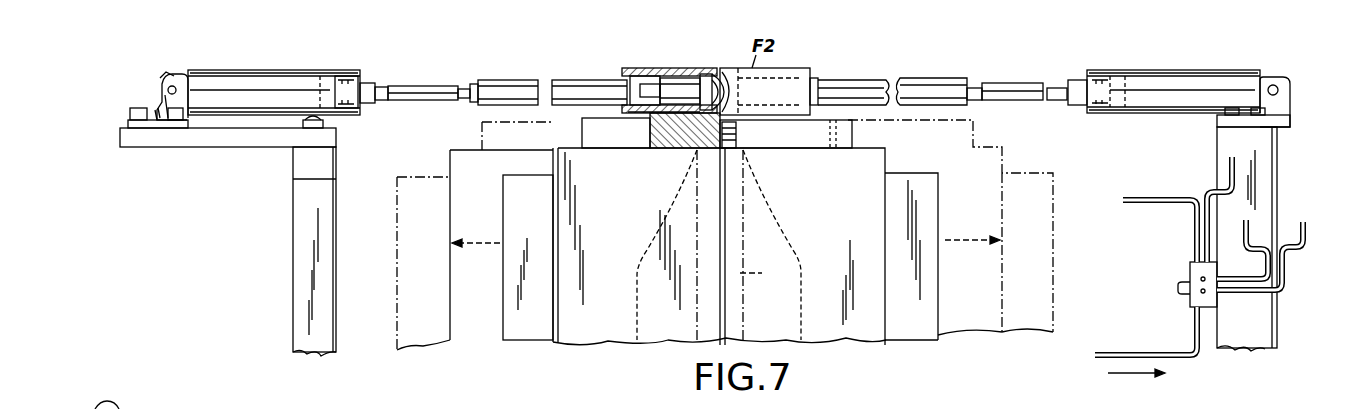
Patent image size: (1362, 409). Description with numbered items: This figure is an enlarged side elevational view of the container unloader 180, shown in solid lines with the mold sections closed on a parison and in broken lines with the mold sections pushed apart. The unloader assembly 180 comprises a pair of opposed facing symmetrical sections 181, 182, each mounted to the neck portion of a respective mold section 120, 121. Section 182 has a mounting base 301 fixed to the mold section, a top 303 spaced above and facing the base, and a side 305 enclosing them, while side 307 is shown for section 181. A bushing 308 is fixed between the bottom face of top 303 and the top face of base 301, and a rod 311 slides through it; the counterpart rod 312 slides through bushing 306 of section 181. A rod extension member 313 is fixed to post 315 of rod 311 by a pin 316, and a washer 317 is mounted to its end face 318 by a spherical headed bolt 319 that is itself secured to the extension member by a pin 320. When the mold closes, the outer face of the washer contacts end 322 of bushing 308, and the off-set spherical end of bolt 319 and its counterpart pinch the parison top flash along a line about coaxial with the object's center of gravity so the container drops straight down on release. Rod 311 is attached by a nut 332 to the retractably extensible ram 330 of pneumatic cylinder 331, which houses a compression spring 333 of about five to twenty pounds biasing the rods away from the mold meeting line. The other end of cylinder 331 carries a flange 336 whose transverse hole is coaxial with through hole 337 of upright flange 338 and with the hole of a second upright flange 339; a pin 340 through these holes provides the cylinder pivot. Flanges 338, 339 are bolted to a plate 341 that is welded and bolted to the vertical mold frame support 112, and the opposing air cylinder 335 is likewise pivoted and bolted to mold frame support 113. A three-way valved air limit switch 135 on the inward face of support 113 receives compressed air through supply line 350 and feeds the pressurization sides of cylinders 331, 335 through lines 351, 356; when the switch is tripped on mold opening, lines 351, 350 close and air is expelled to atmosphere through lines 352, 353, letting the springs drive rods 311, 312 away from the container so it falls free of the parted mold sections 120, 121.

The vertical mold frame support 112 is at (322, 167).
The mold frame support 113 is at (1262, 212).
The mold section 120 is at (560, 153).
The mold section 121 is at (834, 150).
The 3-way valved air limit switch AL- 135 is at (1148, 339).
The container unloader 180 is at (1005, 60).
The unloader section 181 is at (772, 66).
The unloader section 182 is at (576, 78).
The mounting base 301 is at (624, 118).
The top 303 is at (648, 68).
The side 305 is at (625, 68).
The bushing 306 is at (870, 62).
The side 307 is at (814, 78).
The bushing 308 is at (624, 80).
The rod 311 is at (490, 80).
The rod 312 is at (188, 123).
The rod extension member 313 is at (653, 76).
The post 315 is at (640, 108).
The pin 316 is at (650, 114).
The washer 317 is at (708, 74).
The end face 318 is at (836, 128).
The spherical headed bolt 319 is at (728, 80).
The pin 320 is at (682, 78).
The end of bushing 322 is at (702, 102).
The ram 330 is at (418, 100).
The pneumatic cylinder 331 is at (272, 86).
The nut 332 is at (466, 86).
The compression spring 333 is at (351, 70).
The air cylinder 335 is at (1154, 70).
The flange 336 is at (164, 77).
The through hole 337 is at (165, 94).
The upright flange 338 is at (160, 109).
The second upright flange 339 is at (118, 122).
The pin 340 is at (228, 56).
The plate 341 is at (282, 142).
The compressed air supply line 350 is at (1151, 351).
The line 351 is at (1230, 163).
The line 352 is at (1171, 193).
The line 353 is at (1186, 285).
The line 356 is at (1248, 228).